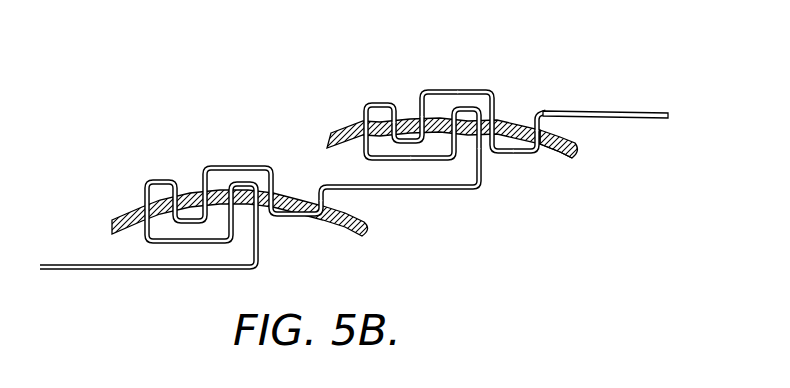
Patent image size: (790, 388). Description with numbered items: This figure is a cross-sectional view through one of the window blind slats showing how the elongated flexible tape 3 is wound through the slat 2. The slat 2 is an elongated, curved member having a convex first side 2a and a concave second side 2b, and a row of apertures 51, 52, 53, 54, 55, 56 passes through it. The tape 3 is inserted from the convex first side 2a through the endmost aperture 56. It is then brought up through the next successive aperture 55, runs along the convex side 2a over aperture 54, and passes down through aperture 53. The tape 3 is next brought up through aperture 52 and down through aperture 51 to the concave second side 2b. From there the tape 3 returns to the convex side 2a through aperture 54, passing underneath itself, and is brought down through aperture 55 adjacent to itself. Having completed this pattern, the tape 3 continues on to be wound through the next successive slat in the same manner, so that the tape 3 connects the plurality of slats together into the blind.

The slat 2 is at (336, 131).
The convex first side 2a is at (575, 140).
The concave second side 2b is at (567, 162).
The tape 3 is at (650, 112).
The aperture 51 is at (362, 118).
The aperture 52 is at (397, 112).
The aperture 53 is at (418, 108).
The aperture 54 is at (455, 103).
The aperture 55 is at (500, 112).
The aperture 56 is at (527, 117).